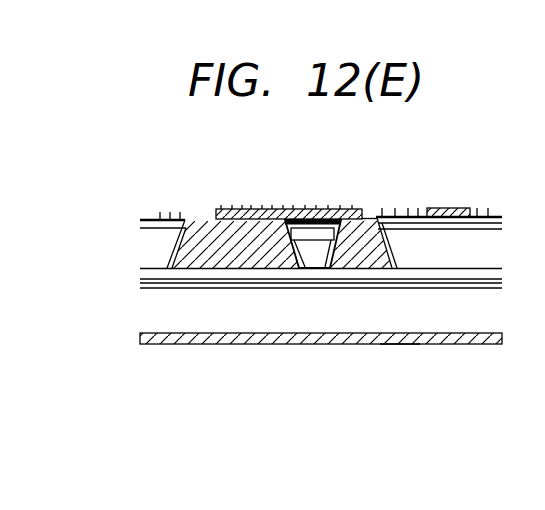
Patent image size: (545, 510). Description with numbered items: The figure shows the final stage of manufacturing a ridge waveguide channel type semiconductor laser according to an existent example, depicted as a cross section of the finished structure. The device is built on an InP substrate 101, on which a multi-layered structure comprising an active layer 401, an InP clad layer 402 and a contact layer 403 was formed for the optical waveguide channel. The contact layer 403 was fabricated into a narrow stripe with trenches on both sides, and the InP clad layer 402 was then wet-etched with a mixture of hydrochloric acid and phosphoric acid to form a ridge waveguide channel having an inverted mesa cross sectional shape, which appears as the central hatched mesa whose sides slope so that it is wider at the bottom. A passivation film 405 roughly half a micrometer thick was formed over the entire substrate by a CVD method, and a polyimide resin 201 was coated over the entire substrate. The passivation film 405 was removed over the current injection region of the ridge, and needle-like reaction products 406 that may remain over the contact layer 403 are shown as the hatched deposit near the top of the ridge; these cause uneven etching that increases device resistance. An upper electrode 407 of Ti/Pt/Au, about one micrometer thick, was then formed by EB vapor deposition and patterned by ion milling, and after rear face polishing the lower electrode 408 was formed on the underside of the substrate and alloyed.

The InP substrate 101 is at (145, 317).
The polyimide resin 201 is at (349, 265).
The active layer 401 is at (142, 288).
The InP clad layer 402 is at (150, 252).
The contact layer 403 is at (140, 229).
The passivation film 405 is at (162, 218).
The needle-like reaction products 406 is at (203, 210).
The upper electrode 407 is at (312, 208).
The lower electrode 408 is at (400, 346).